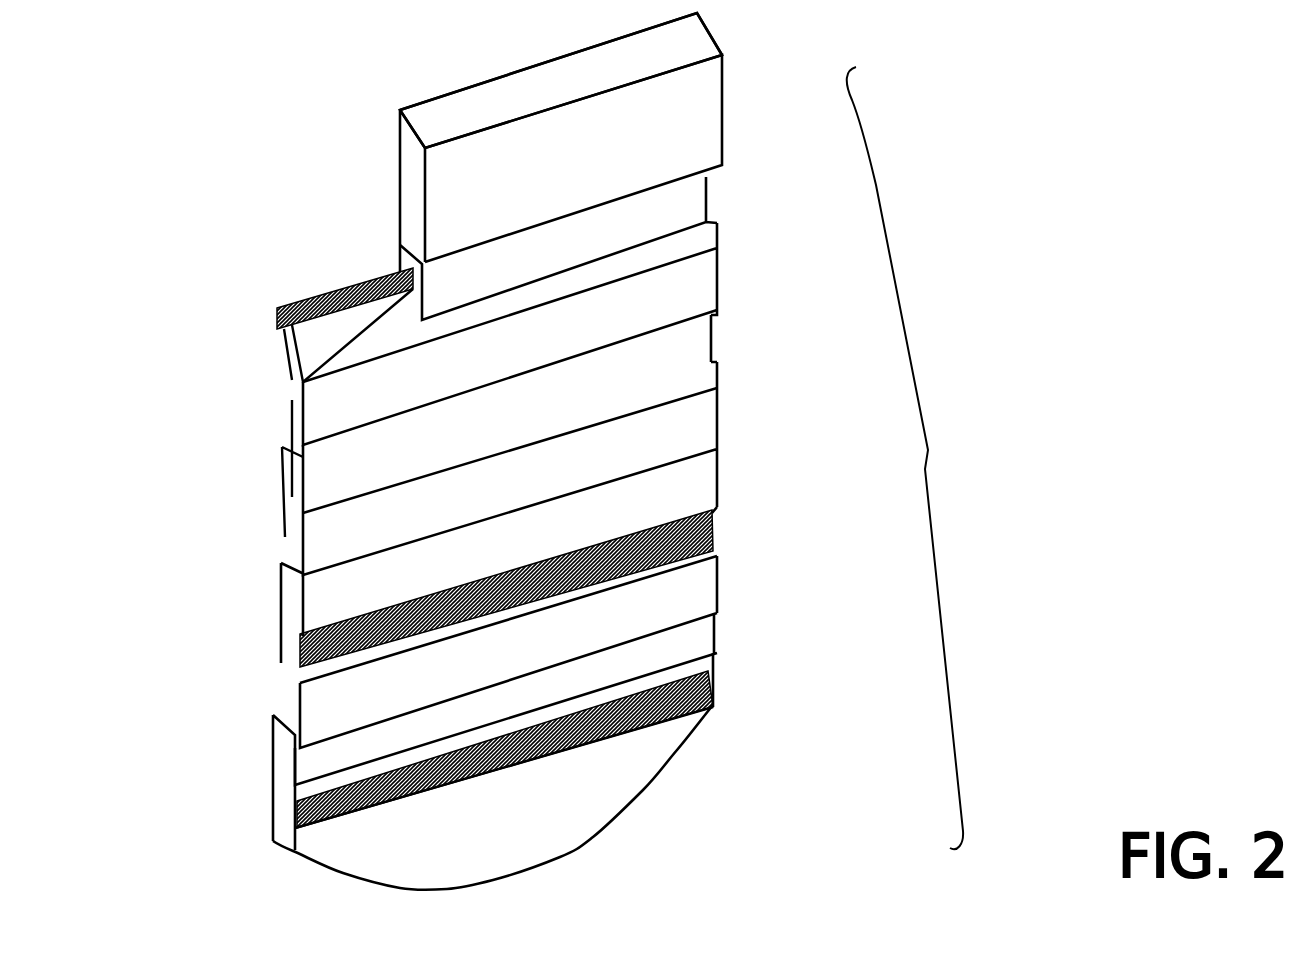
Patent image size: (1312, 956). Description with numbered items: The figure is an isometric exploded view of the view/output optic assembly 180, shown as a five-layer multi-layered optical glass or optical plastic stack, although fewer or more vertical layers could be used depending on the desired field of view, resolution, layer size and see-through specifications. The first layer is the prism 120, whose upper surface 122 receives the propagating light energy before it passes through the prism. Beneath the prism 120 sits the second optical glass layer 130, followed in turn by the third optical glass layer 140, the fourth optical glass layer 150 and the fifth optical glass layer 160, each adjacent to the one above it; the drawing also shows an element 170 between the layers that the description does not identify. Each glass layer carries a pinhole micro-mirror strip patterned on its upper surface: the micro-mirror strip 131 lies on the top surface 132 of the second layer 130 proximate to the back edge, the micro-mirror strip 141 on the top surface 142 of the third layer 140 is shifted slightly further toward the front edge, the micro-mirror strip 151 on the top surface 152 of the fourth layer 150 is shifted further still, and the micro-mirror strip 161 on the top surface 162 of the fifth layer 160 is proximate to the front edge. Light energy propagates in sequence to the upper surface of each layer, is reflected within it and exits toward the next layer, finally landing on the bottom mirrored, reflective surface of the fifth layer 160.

The prism 120 is at (505, 142).
The upper surface 122 is at (532, 72).
The second optical glass layer 130 is at (512, 302).
The micro-mirror strip 131 is at (281, 310).
The top surface 132 is at (341, 353).
The third optical glass layer 140 is at (437, 468).
The micro-mirror strip 141 is at (279, 463).
The top surface 142 is at (316, 508).
The fourth optical glass layer 150 is at (477, 610).
The micro-mirror strip 151 is at (290, 668).
The top surface 152 is at (697, 541).
The fifth optical glass layer 160 is at (472, 771).
The micro-mirror strip 161 is at (290, 806).
The top surface 162 is at (284, 768).
The adhesive / spacer layer 170 is at (704, 208).
The optic assembly 180 is at (991, 385).